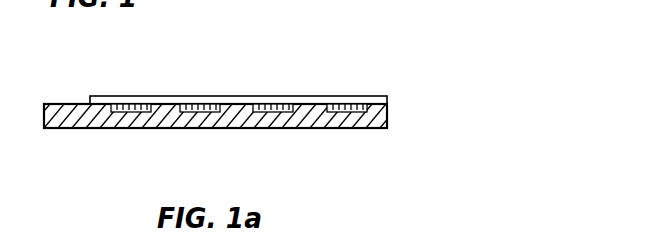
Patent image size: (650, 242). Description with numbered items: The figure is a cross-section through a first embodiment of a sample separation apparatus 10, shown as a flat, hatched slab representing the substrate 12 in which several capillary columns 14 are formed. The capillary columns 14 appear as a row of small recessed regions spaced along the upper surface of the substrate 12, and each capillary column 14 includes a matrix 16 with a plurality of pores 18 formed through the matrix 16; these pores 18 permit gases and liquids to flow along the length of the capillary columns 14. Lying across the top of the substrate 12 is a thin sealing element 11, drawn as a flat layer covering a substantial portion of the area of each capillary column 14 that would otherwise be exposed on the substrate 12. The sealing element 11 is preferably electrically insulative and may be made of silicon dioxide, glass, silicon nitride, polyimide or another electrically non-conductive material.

The sample separation apparatus 10 is at (251, 103).
The sealing element 11 is at (388, 98).
The substrate 12 is at (156, 115).
The capillary columns 14 is at (239, 118).
The matrix 16 is at (130, 110).
The pores 18 is at (143, 110).